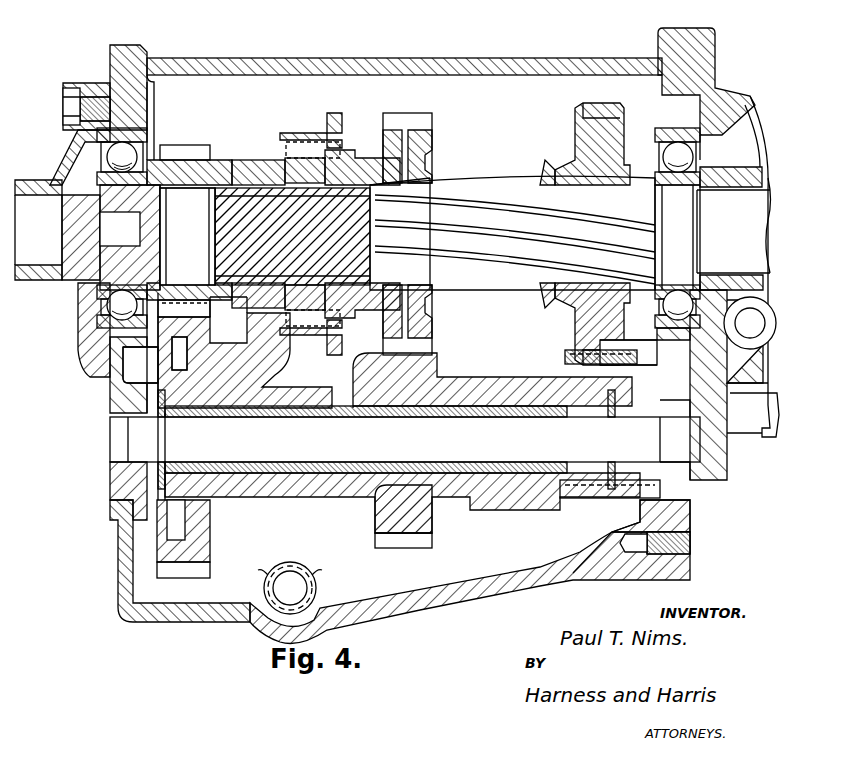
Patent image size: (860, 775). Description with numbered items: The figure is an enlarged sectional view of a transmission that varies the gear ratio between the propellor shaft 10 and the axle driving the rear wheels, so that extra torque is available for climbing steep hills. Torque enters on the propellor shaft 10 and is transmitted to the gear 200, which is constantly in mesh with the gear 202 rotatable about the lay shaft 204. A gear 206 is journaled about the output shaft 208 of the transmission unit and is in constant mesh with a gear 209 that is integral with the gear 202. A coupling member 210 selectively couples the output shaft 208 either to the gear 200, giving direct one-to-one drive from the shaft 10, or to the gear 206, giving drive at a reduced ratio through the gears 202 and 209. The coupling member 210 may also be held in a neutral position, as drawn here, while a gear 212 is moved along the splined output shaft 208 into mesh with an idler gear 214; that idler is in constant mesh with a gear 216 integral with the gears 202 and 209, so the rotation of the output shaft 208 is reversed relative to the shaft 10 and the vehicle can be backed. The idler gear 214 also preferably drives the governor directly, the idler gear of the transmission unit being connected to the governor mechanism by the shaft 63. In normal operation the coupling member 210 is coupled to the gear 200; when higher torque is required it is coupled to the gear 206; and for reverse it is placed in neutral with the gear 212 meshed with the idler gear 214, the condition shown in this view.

The propellor shaft 10 is at (52, 195).
The gear 200 is at (178, 150).
The coupling member 210 is at (332, 115).
The gear 206 is at (428, 123).
The gear 212 is at (585, 120).
The output shaft 208 is at (498, 180).
The gear 202 is at (205, 352).
The idler gear 214 is at (568, 358).
The lay shaft 204 is at (138, 443).
The shaft 63 is at (775, 437).
The gear 209 is at (425, 540).
The gear 216 is at (576, 498).